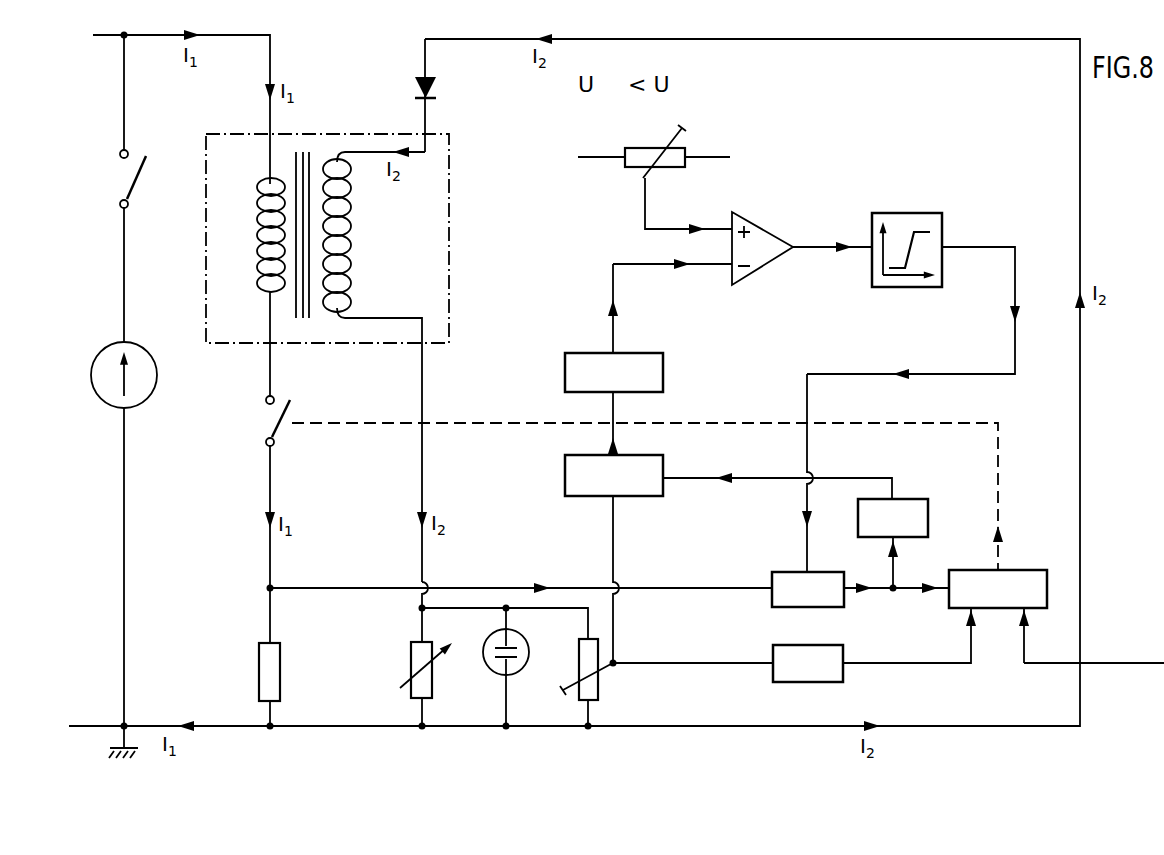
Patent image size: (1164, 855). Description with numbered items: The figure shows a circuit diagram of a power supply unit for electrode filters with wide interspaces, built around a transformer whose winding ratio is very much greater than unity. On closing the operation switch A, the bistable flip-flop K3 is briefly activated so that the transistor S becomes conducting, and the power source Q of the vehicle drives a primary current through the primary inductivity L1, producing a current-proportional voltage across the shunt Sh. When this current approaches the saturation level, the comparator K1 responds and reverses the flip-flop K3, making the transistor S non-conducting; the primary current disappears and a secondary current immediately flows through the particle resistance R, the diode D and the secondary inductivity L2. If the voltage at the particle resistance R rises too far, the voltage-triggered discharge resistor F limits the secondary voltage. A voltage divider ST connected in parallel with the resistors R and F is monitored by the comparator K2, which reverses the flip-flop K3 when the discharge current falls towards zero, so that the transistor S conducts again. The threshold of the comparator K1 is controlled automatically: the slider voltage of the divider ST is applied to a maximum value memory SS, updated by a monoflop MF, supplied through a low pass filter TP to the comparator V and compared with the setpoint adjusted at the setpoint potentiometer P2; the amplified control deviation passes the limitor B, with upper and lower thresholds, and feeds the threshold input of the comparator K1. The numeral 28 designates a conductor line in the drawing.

The conductor line 28 is at (118, 262).
The operation switch A is at (140, 179).
The power source Q is at (113, 375).
The diode D is at (437, 95).
The primary inductivity L1 is at (257, 287).
The secondary inductivity L2 is at (374, 367).
The transistor S is at (280, 423).
The shunt Sh is at (250, 684).
The particle resistance R is at (425, 683).
The voltage-triggered discharge resistor F is at (514, 667).
The voltage divider ST is at (600, 682).
The comparator K2 is at (888, 645).
The low pass filter TP is at (628, 359).
The maximum value memory SS is at (710, 477).
The monoflop MF is at (909, 543).
The comparator K1 is at (844, 490).
The bistable flip-flop K3 is at (1005, 575).
The limitor B is at (913, 279).
The comparator V is at (742, 242).
The setpoint potentiometer P2 is at (655, 177).